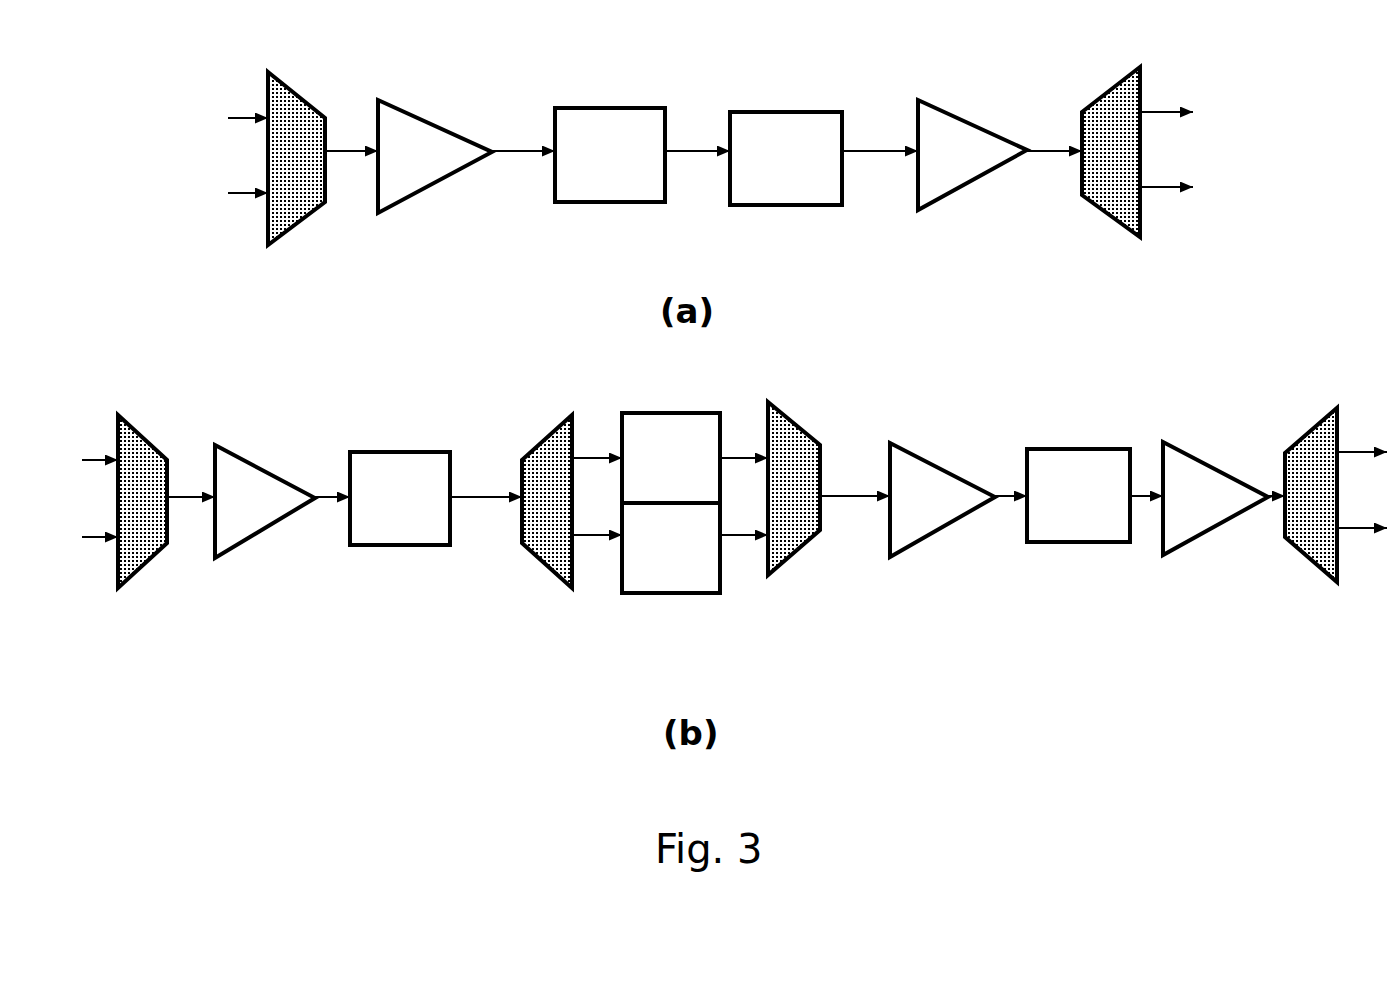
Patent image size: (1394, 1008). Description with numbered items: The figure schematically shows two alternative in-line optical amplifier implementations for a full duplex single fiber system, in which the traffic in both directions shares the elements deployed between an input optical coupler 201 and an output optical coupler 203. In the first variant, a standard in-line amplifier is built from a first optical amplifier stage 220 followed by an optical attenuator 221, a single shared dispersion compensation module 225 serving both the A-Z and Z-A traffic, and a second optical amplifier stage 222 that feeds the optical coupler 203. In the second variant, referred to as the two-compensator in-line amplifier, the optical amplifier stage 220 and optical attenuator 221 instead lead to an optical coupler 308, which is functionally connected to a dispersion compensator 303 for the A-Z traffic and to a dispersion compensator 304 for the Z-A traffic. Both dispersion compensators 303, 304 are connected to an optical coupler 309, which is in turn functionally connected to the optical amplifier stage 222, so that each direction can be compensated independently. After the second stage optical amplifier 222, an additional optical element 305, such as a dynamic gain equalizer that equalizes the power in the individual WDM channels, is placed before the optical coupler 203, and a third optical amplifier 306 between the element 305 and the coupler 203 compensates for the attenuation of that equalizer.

The optical coupler 201 is at (224, 355).
The optical coupler 203 is at (1203, 349).
The optical amplifier stage 220 is at (353, 329).
The optical attenuator 221 is at (507, 326).
The optical amplifier stage 222 is at (958, 328).
The dispersion compensation module 225 is at (786, 158).
The dispersion compensator 303 is at (671, 458).
The dispersion compensator 304 is at (671, 548).
The additional optical element 305 is at (1078, 495).
The optical amplifier 306 is at (1215, 498).
The optical coupler 308 is at (556, 526).
The optical coupler 309 is at (793, 519).